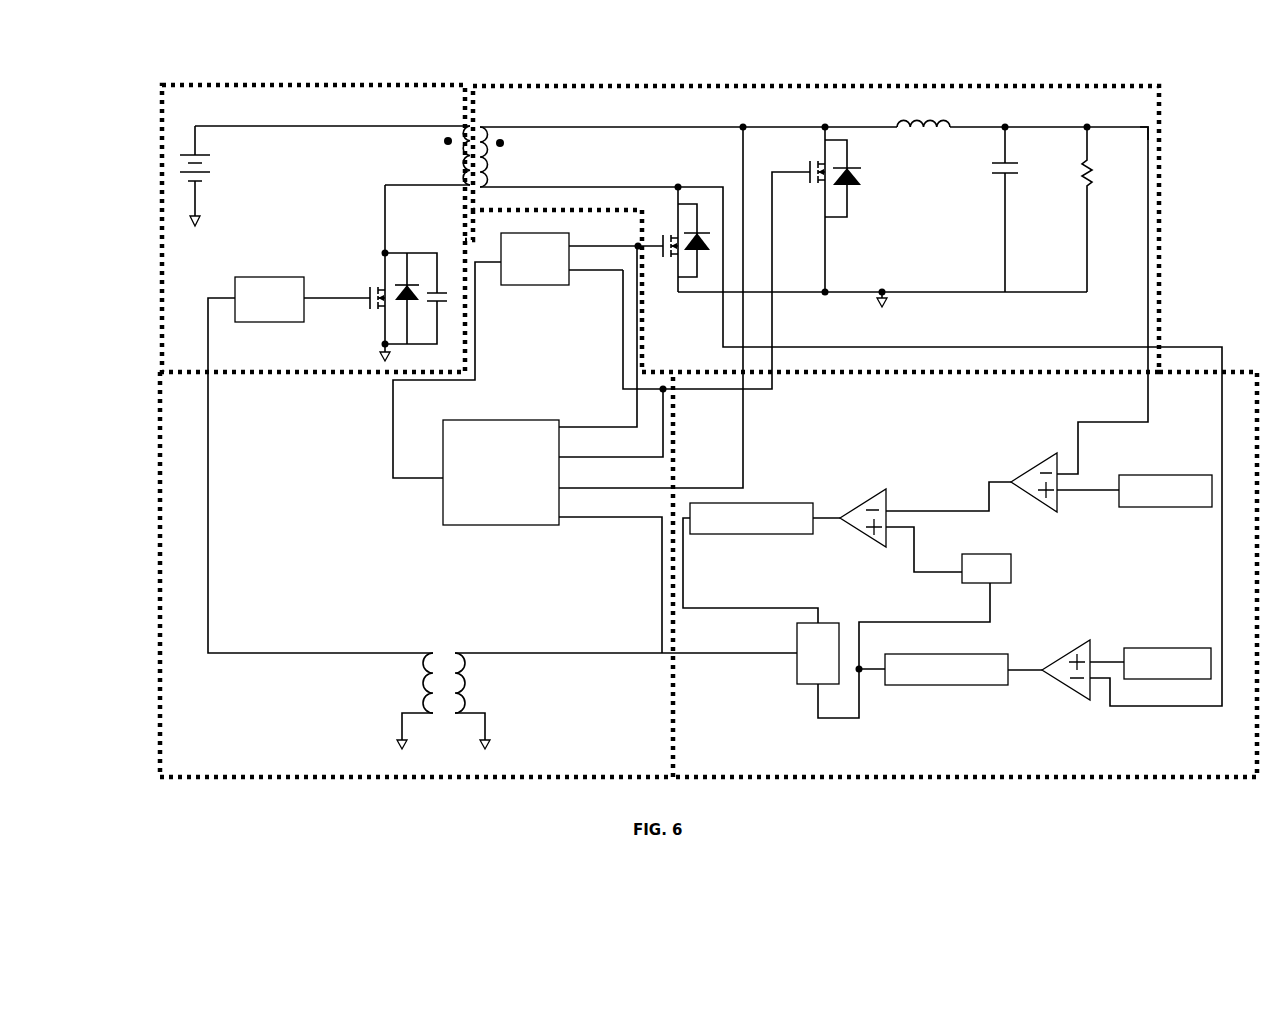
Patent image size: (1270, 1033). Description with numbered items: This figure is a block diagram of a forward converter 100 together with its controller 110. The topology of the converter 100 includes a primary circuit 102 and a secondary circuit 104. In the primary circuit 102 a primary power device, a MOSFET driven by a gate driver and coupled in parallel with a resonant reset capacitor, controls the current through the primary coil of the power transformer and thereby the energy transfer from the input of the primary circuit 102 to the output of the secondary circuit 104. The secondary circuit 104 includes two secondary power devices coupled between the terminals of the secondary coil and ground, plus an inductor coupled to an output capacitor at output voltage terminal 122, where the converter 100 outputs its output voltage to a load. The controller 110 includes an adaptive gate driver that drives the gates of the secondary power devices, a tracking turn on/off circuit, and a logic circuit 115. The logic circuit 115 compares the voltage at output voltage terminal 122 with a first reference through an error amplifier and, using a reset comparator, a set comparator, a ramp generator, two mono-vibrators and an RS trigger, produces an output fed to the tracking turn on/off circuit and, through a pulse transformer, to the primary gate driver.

The forward converter 100 is at (1100, 60).
The primary circuit 102 is at (375, 85).
The secondary circuit 104 is at (715, 85).
The controller 110 is at (688, 372).
The logic circuit 115 is at (1165, 372).
The output voltage terminal 122 is at (1148, 125).